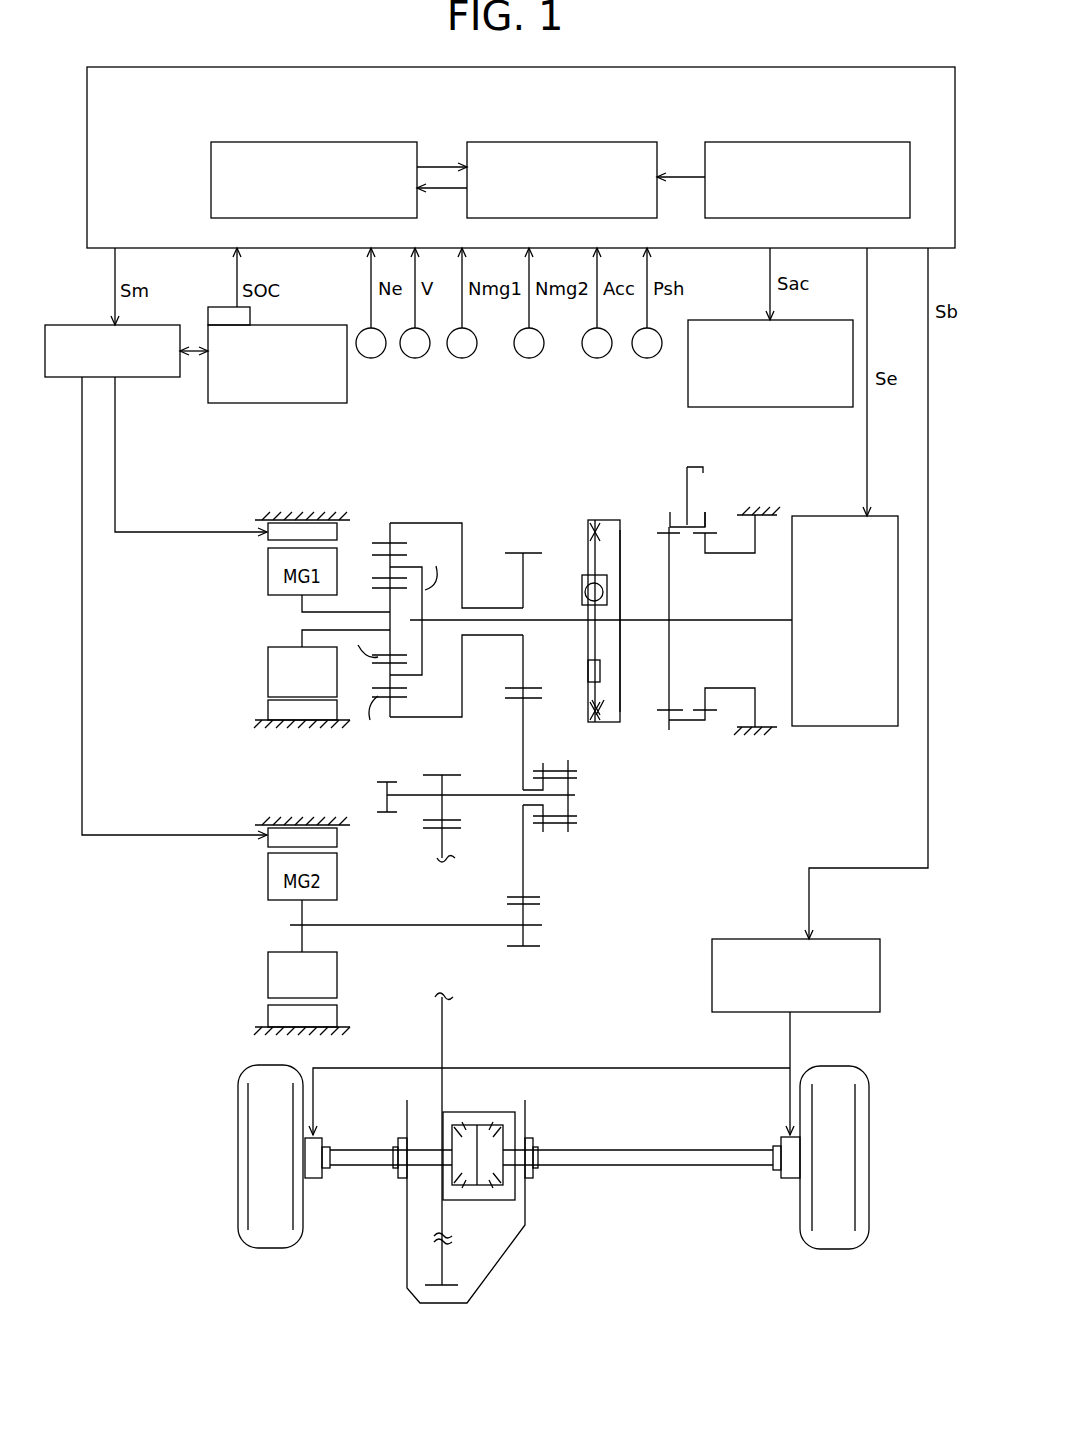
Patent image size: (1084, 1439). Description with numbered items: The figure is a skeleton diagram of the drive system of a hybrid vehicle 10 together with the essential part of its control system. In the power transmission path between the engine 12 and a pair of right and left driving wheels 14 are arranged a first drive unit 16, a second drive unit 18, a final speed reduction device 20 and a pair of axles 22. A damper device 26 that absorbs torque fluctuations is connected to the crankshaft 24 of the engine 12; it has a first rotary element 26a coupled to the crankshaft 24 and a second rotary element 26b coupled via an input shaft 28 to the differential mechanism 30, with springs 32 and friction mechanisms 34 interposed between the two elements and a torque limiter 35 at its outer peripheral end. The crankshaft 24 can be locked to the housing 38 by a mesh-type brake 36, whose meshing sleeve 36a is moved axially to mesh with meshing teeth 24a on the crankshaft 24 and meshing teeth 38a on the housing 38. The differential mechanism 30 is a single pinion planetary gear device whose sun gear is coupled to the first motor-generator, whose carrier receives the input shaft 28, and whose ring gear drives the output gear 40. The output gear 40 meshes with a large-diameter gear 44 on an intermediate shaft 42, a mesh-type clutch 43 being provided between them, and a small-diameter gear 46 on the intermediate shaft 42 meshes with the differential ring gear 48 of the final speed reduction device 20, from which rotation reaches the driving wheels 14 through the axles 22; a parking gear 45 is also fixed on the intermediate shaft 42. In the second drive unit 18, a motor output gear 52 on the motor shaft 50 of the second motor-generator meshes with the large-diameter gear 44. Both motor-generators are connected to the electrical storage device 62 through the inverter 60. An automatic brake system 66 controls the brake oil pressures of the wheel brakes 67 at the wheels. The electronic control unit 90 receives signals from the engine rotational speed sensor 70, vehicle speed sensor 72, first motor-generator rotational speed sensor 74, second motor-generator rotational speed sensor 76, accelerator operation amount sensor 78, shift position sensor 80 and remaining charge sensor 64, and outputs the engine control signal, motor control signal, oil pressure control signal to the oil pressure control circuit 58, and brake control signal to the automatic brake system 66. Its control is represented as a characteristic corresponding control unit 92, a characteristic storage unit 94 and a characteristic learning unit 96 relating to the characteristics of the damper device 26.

The hybrid vehicle 10 is at (141, 1227).
The engine 12 is at (834, 718).
The driving wheels 14 is at (272, 1237).
The first drive unit 16 is at (636, 851).
The second drive unit 18 is at (464, 969).
The final speed reduction device 20 is at (492, 1201).
The axles 22 is at (358, 1148).
The crankshaft 24 is at (722, 623).
The meshing teeth 24a is at (657, 530).
The damper device 26 is at (578, 589).
The first rotary element 26a is at (622, 648).
The second rotary element 26b is at (592, 613).
The input shaft 28 is at (551, 624).
The differential mechanism 30 is at (435, 594).
The springs 32 is at (590, 575).
The friction mechanisms 34 is at (587, 668).
The torque limiter 35 is at (606, 720).
The mesh-type brake 36 is at (696, 490).
The meshing sleeve 36a is at (684, 722).
The housing 38 is at (762, 512).
The meshing teeth 38a is at (708, 528).
The output gear 40 is at (513, 553).
The intermediate shaft 42 is at (485, 800).
The mesh-type clutch 43 is at (568, 831).
The large-diameter gear 44 is at (510, 698).
The parking gear 45 is at (382, 780).
The small-diameter gear 46 is at (445, 775).
The differential ring gear 48 is at (430, 822).
The motor shaft 50 is at (397, 928).
The motor output gear 52 is at (530, 953).
The oil pressure control circuit 58 is at (790, 407).
The inverter 60 is at (138, 377).
The electrical storage device 62 is at (238, 403).
The SOC sensor 64 is at (215, 307).
The automatic brake system 66 is at (748, 939).
The wheel brakes 67 is at (310, 1178).
The engine rotational speed sensor 70 is at (376, 356).
The vehicle speed sensor 72 is at (420, 356).
The MG1 rotational speed sensor 74 is at (467, 356).
The MG2 rotational speed sensor 76 is at (534, 356).
The accelerator operation amount sensor 78 is at (602, 356).
The shift position sensor 80 is at (652, 356).
The electronic control unit 90 is at (778, 72).
The characteristic corresponding control unit 92 is at (383, 142).
The characteristic storage unit 94 is at (555, 142).
The characteristic learning unit 96 is at (733, 142).